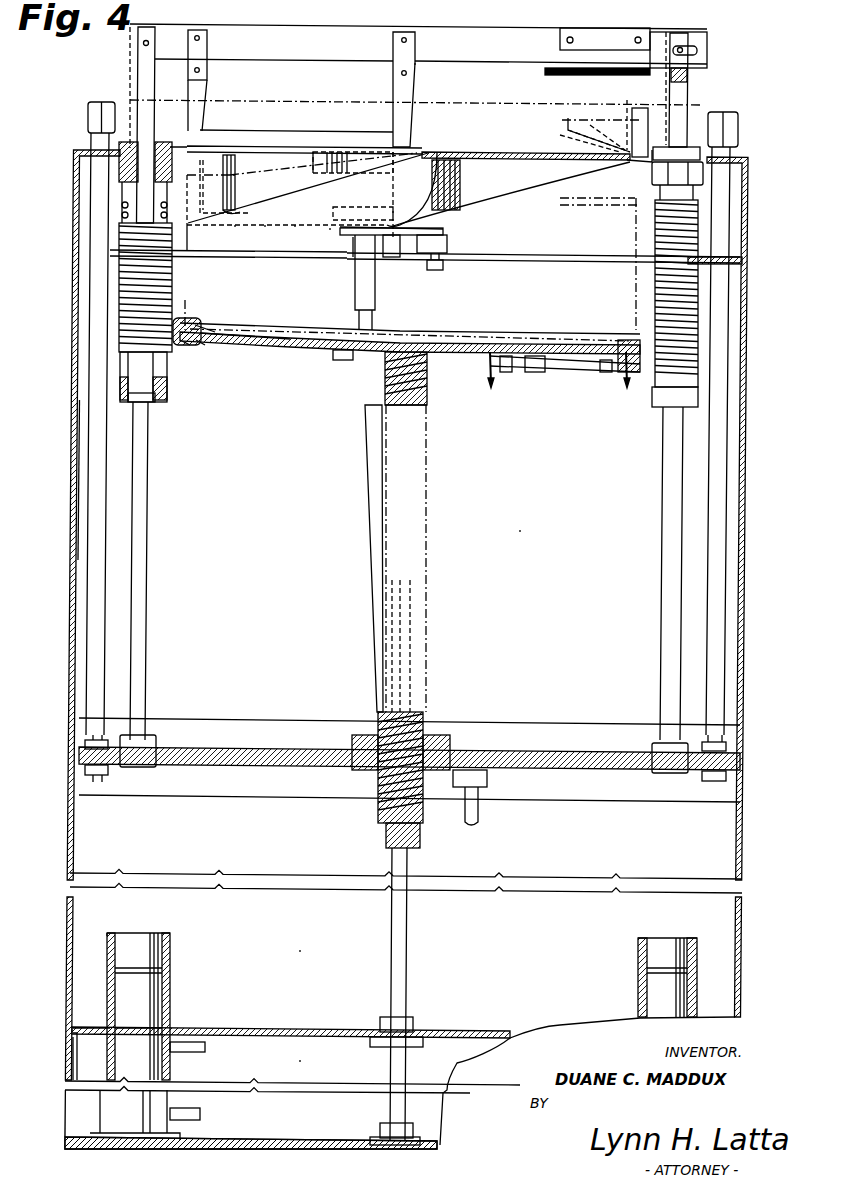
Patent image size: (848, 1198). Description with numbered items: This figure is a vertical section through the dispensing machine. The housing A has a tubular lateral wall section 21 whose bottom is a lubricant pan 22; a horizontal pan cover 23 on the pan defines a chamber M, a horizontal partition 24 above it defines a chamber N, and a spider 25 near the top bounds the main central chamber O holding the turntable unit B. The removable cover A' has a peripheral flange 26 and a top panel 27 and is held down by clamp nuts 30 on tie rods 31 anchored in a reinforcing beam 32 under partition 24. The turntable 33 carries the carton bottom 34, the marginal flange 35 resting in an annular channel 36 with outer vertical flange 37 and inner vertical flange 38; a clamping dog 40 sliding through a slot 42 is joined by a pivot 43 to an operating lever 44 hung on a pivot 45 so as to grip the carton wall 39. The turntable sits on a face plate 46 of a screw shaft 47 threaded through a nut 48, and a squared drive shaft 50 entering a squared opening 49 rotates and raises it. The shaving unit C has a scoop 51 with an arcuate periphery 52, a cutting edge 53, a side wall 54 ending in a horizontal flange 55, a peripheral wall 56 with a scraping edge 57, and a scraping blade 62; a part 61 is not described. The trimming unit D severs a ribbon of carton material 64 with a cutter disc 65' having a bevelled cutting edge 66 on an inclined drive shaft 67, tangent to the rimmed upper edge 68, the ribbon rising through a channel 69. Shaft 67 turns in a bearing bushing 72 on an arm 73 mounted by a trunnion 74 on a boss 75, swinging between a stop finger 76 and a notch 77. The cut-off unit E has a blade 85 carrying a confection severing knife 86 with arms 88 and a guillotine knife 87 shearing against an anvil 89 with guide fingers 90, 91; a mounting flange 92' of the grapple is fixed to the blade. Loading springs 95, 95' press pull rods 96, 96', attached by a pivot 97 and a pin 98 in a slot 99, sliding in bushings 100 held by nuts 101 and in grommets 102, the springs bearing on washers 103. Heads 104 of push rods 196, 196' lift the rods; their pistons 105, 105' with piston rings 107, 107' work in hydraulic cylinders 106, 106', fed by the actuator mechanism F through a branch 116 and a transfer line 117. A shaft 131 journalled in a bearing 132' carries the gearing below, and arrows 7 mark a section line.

The tubular lateral wall section 21 is at (70, 561).
The lubricant pan 22 is at (400, 1150).
The horizontal pan cover 23 is at (483, 1031).
The horizontal partition 24 is at (409, 760).
The spider 25 is at (522, 262).
The peripheral flange 26 is at (68, 186).
The top panel 27 is at (628, 165).
The clamp nuts 30 is at (88, 118).
The tie rods 31 is at (96, 422).
The reinforcing beam 32 is at (409, 766).
The turntable 33 is at (283, 350).
The carton bottom 34 is at (306, 328).
The marginal flange 35 is at (200, 346).
The annular channel 36 is at (190, 345).
The outer vertical flange 37 is at (188, 322).
The inner vertical flange 38 is at (215, 330).
The carton wall 39 is at (636, 291).
The clamping dog 40 is at (605, 372).
The slot 42 is at (626, 360).
The pivot 43 is at (533, 368).
The operating lever 44 is at (560, 362).
The pivot 45 is at (505, 372).
The face plate 46 is at (343, 360).
The screw shaft 47 is at (420, 400).
The nut 48 is at (450, 747).
The squared opening 49 is at (420, 852).
The squared drive shaft 50 is at (408, 866).
The scoop 51 is at (274, 230).
The arcuate periphery 52 is at (315, 188).
The cutting edge 53 is at (230, 230).
The side wall 54 is at (435, 185).
The horizontal flange 55 is at (462, 152).
The arcuate peripheral wall 56 is at (350, 158).
The scraping edge 57 is at (312, 168).
The curved guide 61 is at (391, 191).
The scraping blade 62 is at (235, 169).
The ribbon of carton material 64 is at (508, 152).
The bottom 65' is at (304, 235).
The bevelled cutting edge 66 is at (363, 201).
The drive shaft 67 is at (366, 418).
The rimmed upper edge 68 is at (585, 205).
The channel 69 is at (578, 182).
The bearing bushing 72 is at (375, 299).
The arm 73 is at (445, 231).
The trunnion 74 is at (434, 271).
The boss 75 is at (447, 246).
The stop finger 76 is at (392, 258).
The notch 77 is at (354, 257).
The blade 85 is at (476, 30).
The confection severing knife 86 is at (296, 133).
The ribbon severing guillotine knife 87 is at (560, 76).
The upwardly extending arms 88 is at (205, 113).
The guillotine anvil 89 is at (583, 130).
The guide finger 90 is at (562, 121).
The guide finger 91 is at (638, 110).
The mounting flange 92' is at (605, 29).
The loading spring 95 is at (111, 287).
The loading spring 95' is at (719, 293).
The pull rod 96 is at (126, 125).
The pull rod 96' is at (693, 89).
The pivot 97 is at (143, 44).
The pin 98 is at (681, 46).
The slot 99 is at (698, 51).
The bushings 100 is at (162, 143).
The nuts 101 is at (174, 168).
The grommets 102 is at (158, 748).
The washers 103 is at (170, 392).
The heads 104 is at (153, 403).
The piston 105 is at (176, 1006).
The piston 105' is at (701, 977).
The hydraulic cylinder 106 is at (155, 1006).
The hydraulic cylinder 106' is at (682, 977).
The piston rings 107 is at (159, 996).
The piston ring 107' is at (686, 984).
The branch 116 is at (200, 1115).
The transfer line 117 is at (205, 1048).
The shaft 131 is at (478, 816).
The bearing 132' is at (492, 779).
The push rod 196 is at (157, 571).
The push rod 196' is at (651, 573).
The housing A is at (64, 480).
The removable cover A' is at (739, 518).
The turntable unit B is at (409, 390).
The ice cream shaving unit C is at (241, 237).
The carton trimming unit D is at (330, 240).
The cut-off unit E is at (419, 74).
The actuator mechanism F is at (188, 948).
The chamber M is at (312, 1069).
The chamber N is at (310, 958).
The main central chamber O is at (523, 539).
The section line 7 is at (490, 350).